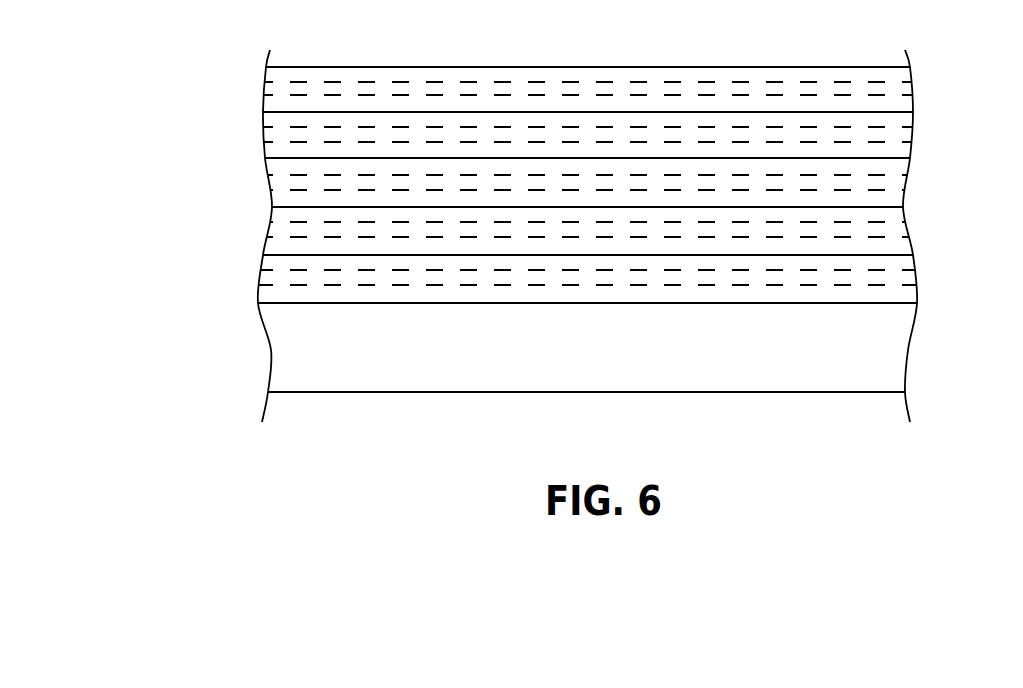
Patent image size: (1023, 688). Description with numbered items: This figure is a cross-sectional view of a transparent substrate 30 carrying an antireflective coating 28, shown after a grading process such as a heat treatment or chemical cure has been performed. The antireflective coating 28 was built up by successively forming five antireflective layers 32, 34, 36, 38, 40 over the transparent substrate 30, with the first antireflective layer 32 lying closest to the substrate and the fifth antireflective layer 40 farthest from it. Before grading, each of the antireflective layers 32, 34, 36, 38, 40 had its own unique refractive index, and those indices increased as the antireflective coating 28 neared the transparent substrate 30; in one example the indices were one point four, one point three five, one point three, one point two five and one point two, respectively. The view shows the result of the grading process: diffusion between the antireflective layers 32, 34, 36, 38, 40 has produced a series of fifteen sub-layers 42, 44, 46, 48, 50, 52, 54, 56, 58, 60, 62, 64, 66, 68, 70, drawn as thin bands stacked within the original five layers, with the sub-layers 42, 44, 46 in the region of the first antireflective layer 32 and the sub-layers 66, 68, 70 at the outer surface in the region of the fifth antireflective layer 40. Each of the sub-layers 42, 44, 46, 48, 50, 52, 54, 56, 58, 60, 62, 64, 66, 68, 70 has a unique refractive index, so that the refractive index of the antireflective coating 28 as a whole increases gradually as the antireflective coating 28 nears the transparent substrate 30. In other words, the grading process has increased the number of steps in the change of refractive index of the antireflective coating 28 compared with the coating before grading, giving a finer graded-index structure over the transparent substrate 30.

The antireflective coating 28 is at (112, 67).
The transparent substrate 30 is at (112, 307).
The antireflective layer 32 is at (935, 255).
The antireflective layer 34 is at (935, 207).
The antireflective layer 36 is at (935, 158).
The antireflective layer 38 is at (935, 112).
The antireflective layer 40 is at (935, 67).
The sub-layer 42 is at (263, 295).
The sub-layer 44 is at (267, 278).
The sub-layer 46 is at (267, 262).
The sub-layer 48 is at (270, 250).
The sub-layer 50 is at (273, 232).
The sub-layer 52 is at (273, 213).
The sub-layer 54 is at (273, 200).
The sub-layer 56 is at (273, 185).
The sub-layer 58 is at (273, 168).
The sub-layer 60 is at (264, 150).
The sub-layer 62 is at (264, 137).
The sub-layer 64 is at (264, 120).
The sub-layer 66 is at (264, 108).
The sub-layer 68 is at (264, 90).
The sub-layer 70 is at (265, 72).